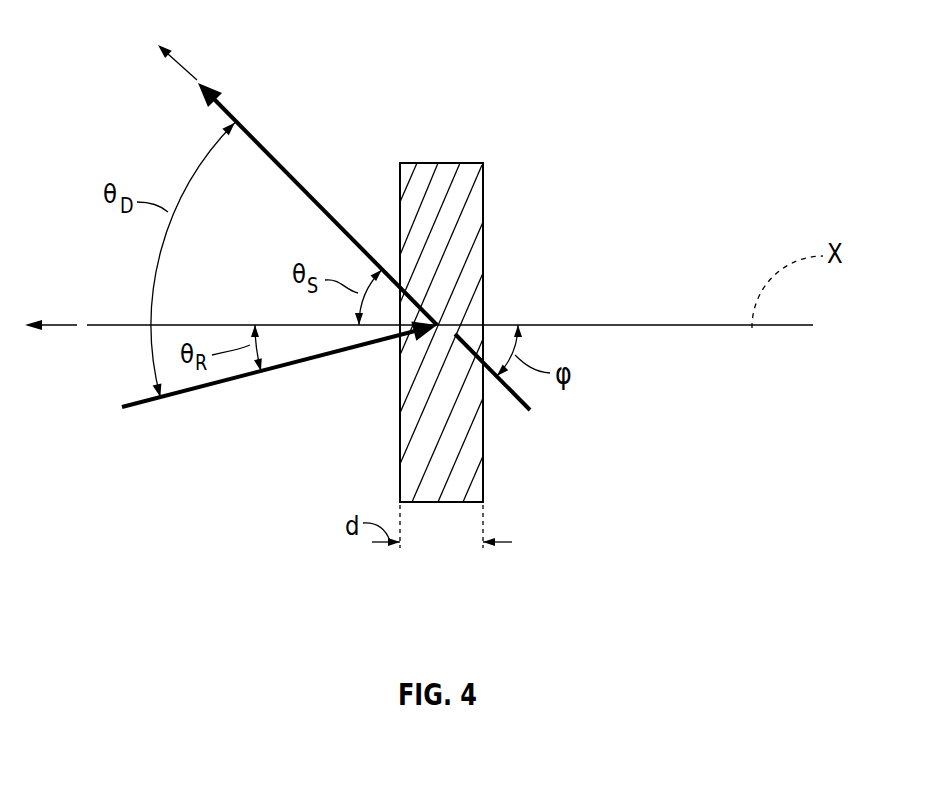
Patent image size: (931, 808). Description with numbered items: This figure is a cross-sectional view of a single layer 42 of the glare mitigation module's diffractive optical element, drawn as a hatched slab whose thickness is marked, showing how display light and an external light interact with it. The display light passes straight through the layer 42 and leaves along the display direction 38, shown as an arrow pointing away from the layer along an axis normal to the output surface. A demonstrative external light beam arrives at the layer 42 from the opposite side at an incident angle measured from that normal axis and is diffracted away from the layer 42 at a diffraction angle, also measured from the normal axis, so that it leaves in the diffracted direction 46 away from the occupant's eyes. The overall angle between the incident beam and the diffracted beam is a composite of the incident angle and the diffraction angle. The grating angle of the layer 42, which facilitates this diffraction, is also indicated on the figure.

The display direction 38 is at (52, 325).
The layer 42 is at (472, 215).
The diffracted direction 46 is at (177, 55).